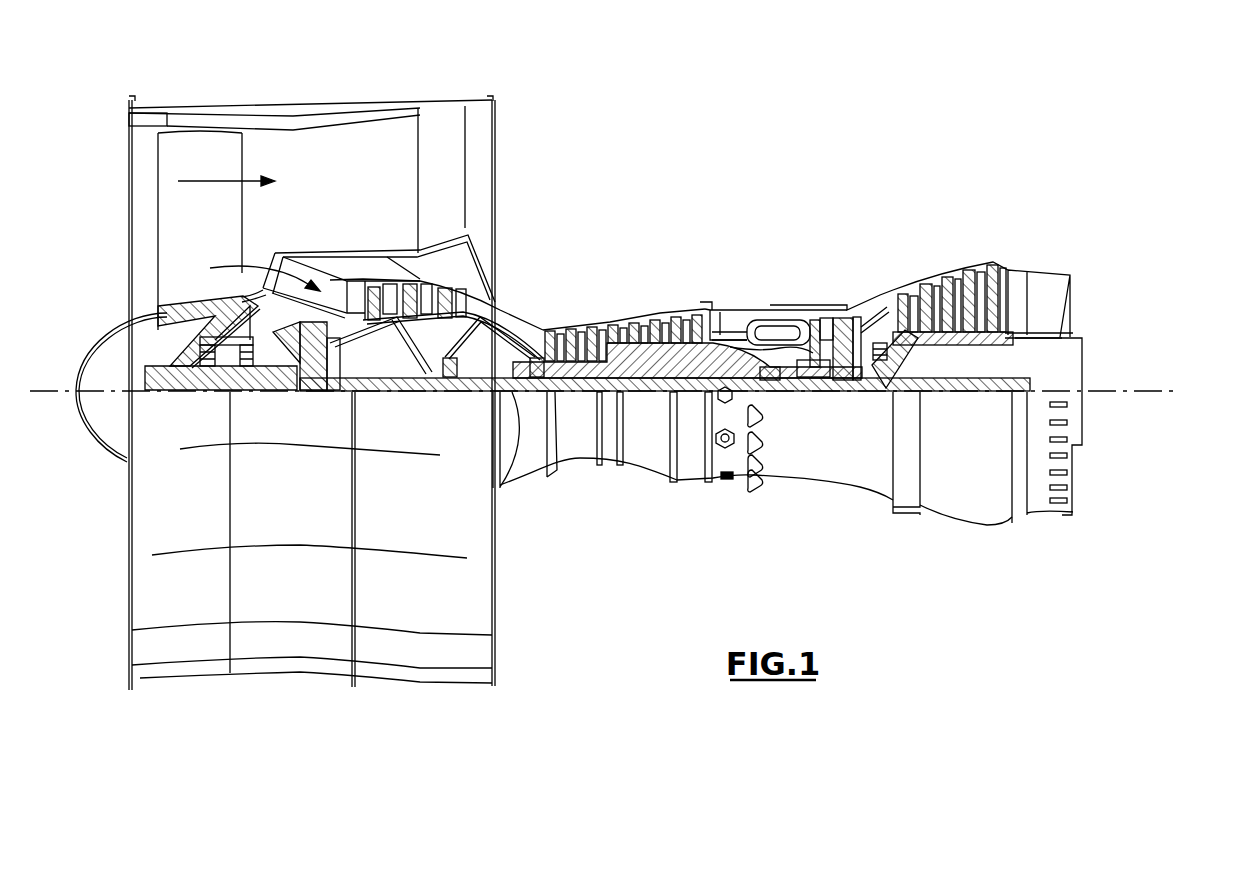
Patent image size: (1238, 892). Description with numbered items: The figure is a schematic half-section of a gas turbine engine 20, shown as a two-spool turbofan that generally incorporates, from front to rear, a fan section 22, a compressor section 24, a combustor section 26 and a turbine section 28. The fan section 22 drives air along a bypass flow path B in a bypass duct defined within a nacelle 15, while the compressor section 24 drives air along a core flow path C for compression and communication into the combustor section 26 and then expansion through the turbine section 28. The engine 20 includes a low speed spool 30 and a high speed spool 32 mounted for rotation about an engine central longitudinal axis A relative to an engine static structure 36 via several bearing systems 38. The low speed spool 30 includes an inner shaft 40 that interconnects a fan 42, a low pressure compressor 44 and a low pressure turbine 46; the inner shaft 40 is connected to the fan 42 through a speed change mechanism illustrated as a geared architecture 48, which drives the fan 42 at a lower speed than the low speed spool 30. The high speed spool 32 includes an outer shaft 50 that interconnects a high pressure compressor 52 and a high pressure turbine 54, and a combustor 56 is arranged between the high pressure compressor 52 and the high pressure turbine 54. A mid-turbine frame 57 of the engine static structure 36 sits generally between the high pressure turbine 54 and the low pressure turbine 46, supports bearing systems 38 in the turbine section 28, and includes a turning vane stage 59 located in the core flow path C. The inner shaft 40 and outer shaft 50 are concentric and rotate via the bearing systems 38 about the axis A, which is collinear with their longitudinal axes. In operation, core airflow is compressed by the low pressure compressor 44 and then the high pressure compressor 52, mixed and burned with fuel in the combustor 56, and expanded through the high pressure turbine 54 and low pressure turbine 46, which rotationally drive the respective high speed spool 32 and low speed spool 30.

The gas turbine engine 20 is at (770, 158).
The fan section 22 is at (242, 102).
The compressor section 24 is at (548, 289).
The combustor section 26 is at (767, 275).
The turbine section 28 is at (920, 242).
The nacelle 15 is at (313, 108).
The low speed spool 30 is at (650, 407).
The high speed spool 32 is at (695, 335).
The engine static structure 36 is at (690, 492).
The bearing systems 38 is at (443, 360).
The inner shaft 40 is at (523, 470).
The fan 42 is at (183, 232).
The low pressure compressor 44 is at (413, 302).
The low pressure turbine 46 is at (955, 288).
The geared architecture 48 is at (318, 372).
The outer shaft 50 is at (775, 388).
The high pressure compressor 52 is at (627, 362).
The high pressure turbine 54 is at (830, 308).
The combustor 56 is at (767, 332).
The mid-turbine frame 57 is at (878, 287).
The turning vane stage 59 is at (882, 325).
The engine central longitudinal axis A is at (1165, 391).
The bypass flow path B is at (213, 181).
The core flow path C is at (256, 273).